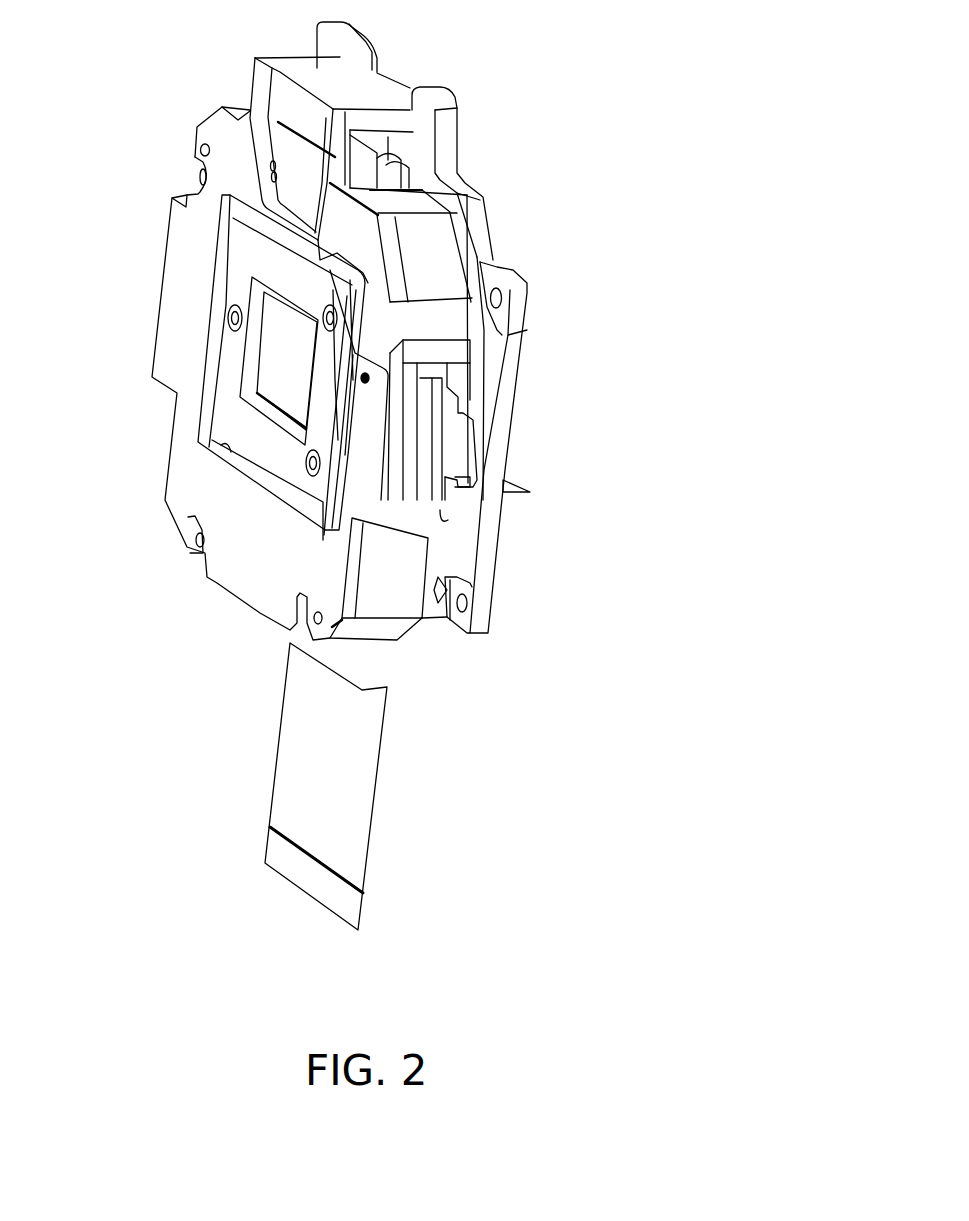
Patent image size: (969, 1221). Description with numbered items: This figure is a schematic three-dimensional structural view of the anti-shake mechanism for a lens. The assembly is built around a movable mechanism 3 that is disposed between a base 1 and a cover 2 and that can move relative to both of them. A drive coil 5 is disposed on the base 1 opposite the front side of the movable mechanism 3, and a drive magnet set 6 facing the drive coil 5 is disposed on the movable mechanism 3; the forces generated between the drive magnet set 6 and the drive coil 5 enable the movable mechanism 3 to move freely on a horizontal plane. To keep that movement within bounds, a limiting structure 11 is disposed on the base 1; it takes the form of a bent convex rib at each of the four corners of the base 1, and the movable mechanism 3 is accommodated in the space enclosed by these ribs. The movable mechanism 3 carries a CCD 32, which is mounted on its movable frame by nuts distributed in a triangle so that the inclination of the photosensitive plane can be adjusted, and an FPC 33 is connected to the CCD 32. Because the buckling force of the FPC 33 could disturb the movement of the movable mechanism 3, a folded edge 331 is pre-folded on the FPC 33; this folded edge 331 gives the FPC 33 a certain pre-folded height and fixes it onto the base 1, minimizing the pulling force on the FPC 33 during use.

The base 1 is at (427, 147).
The limiting structure 11 is at (437, 253).
The cover 2 is at (235, 550).
The movable mechanism 3 is at (417, 512).
The CCD 32 is at (278, 353).
The FPC 33 is at (333, 763).
The folded edge 331 is at (530, 483).
The drive coil 5 is at (448, 373).
The drive magnet set 6 is at (432, 423).